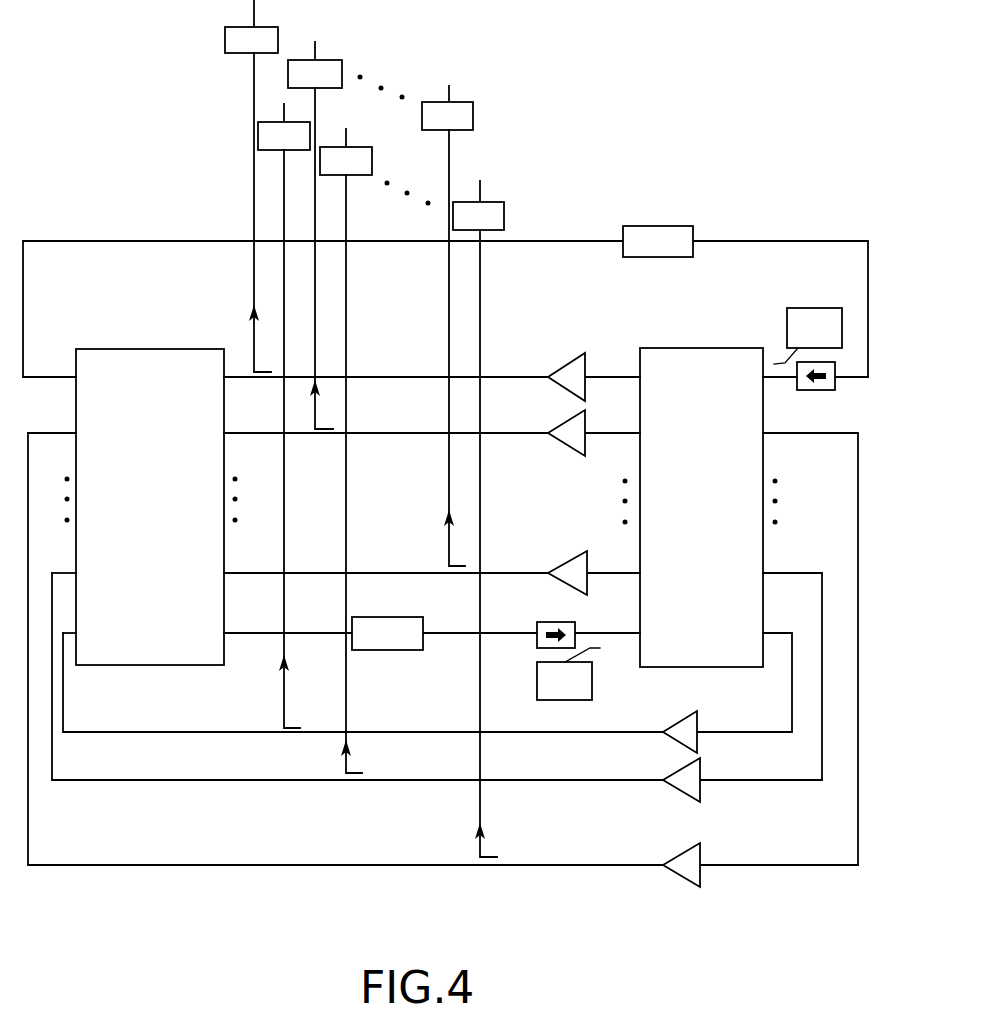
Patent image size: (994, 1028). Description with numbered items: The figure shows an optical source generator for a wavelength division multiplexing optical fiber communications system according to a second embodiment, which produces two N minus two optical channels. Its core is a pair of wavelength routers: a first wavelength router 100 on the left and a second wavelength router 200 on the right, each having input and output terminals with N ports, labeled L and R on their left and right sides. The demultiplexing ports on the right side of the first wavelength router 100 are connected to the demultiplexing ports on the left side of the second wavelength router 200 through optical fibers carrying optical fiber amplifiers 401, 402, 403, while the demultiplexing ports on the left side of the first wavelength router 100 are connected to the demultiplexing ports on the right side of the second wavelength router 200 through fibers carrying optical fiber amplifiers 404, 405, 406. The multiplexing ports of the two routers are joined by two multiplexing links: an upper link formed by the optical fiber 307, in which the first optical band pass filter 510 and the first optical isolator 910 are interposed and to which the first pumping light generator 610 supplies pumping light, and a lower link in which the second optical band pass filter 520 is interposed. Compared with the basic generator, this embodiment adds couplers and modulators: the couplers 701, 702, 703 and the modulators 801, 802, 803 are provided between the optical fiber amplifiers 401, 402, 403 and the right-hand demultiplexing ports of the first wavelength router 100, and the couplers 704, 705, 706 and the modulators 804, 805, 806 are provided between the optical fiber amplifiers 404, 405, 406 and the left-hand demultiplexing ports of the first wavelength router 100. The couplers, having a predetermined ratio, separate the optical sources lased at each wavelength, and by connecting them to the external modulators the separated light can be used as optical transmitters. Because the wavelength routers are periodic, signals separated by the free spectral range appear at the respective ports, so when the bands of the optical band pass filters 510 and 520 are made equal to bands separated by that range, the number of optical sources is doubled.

The first wavelength router 100 is at (163, 333).
The second wavelength router 200 is at (723, 330).
The optical fiber 307 is at (31, 239).
The optical fiber amplifier 401 is at (588, 352).
The optical fiber amplifier 402 is at (587, 422).
The optical fiber amplifier 403 is at (570, 557).
The optical fiber amplifier 404 is at (697, 715).
The optical fiber amplifier 405 is at (700, 770).
The optical fiber amplifier 406 is at (700, 852).
The first optical band pass filter 510 is at (657, 225).
The second optical band pass filter 520 is at (380, 651).
The first pumping light generator 610 is at (810, 307).
The coupler 701 is at (253, 345).
The coupler 702 is at (317, 418).
The coupler 703 is at (450, 557).
The coupler 704 is at (287, 713).
The coupler 705 is at (352, 760).
The coupler 706 is at (484, 850).
The modulator 801 is at (225, 40).
The modulator 802 is at (339, 60).
The modulator 803 is at (472, 118).
The modulator 804 is at (258, 150).
The modulator 805 is at (397, 137).
The modulator 806 is at (504, 218).
The first optical isolator 910 is at (818, 391).